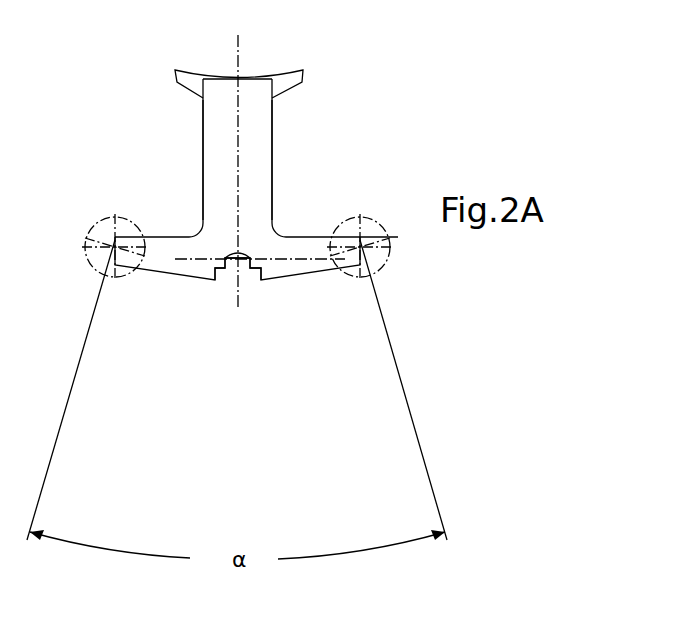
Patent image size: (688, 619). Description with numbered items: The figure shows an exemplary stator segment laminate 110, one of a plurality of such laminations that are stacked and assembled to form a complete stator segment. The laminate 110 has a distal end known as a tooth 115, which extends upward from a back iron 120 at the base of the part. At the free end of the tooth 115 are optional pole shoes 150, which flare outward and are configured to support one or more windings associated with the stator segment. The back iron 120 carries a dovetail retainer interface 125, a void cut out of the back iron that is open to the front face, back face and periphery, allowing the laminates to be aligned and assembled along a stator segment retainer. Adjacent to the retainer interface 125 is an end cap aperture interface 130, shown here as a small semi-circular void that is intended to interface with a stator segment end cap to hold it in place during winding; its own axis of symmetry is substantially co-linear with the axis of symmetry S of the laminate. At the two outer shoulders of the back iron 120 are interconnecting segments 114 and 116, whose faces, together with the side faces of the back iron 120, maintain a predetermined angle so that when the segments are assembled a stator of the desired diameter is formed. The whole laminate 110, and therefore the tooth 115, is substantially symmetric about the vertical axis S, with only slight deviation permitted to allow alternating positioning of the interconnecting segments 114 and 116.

The stator segment laminate 110 is at (378, 53).
The tooth 115 is at (160, 132).
The pole shoes 150 is at (285, 89).
The back iron 120 is at (291, 255).
The dovetail retainer interface 125 is at (222, 276).
The end cap aperture interface 130 is at (240, 254).
The interconnecting segment 114 is at (107, 215).
The interconnecting segment 116 is at (381, 220).
The axis of substantial symmetry S is at (238, 60).